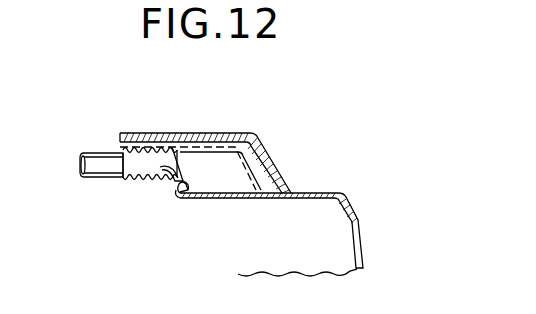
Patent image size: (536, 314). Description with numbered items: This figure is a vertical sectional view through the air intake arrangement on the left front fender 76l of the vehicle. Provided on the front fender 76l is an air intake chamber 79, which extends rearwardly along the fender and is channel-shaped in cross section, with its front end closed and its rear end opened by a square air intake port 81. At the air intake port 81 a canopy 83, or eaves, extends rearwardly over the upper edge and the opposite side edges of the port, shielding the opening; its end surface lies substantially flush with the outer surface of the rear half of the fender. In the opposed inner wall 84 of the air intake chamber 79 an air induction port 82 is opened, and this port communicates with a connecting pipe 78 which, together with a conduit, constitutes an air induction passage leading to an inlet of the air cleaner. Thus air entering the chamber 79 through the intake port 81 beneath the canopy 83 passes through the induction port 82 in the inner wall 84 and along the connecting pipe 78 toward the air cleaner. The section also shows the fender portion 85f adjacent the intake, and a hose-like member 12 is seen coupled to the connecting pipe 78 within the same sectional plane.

The hose 12 is at (94, 172).
The connecting pipe 78 is at (146, 150).
The air intake chamber 79 is at (240, 133).
The air intake port 81 is at (243, 176).
The air induction port 82 is at (165, 172).
The canopy 83 is at (197, 141).
The inner wall 84 is at (196, 199).
The lower wall / flange 85f is at (309, 193).
The left front fender 76l is at (352, 194).